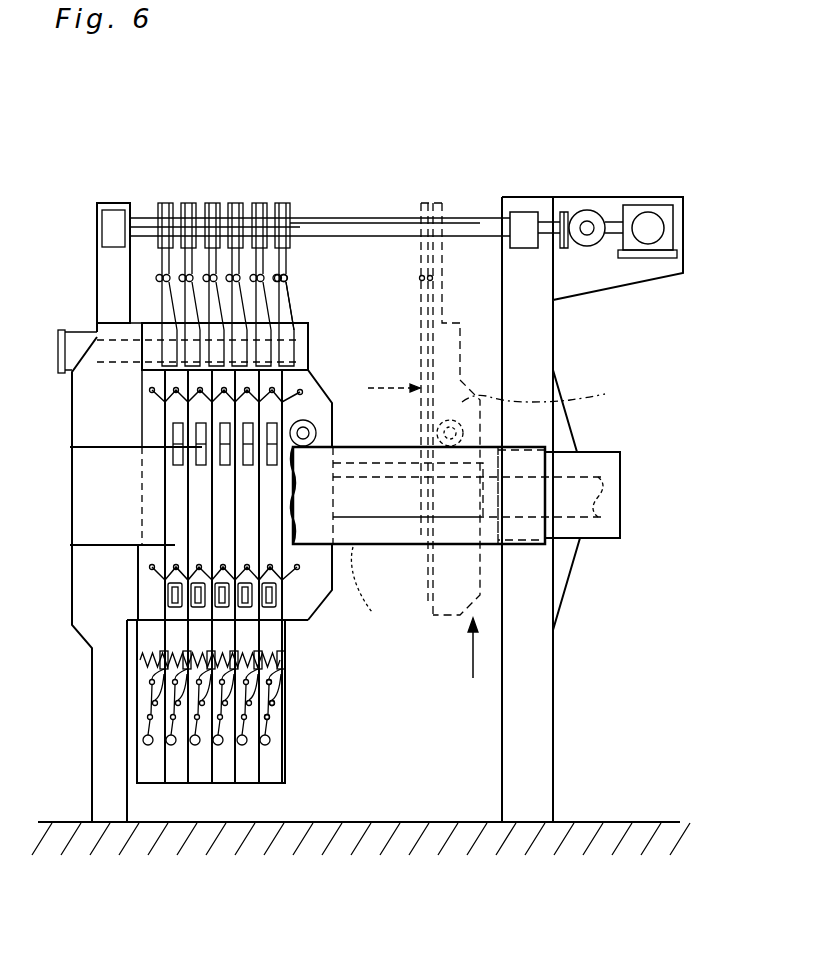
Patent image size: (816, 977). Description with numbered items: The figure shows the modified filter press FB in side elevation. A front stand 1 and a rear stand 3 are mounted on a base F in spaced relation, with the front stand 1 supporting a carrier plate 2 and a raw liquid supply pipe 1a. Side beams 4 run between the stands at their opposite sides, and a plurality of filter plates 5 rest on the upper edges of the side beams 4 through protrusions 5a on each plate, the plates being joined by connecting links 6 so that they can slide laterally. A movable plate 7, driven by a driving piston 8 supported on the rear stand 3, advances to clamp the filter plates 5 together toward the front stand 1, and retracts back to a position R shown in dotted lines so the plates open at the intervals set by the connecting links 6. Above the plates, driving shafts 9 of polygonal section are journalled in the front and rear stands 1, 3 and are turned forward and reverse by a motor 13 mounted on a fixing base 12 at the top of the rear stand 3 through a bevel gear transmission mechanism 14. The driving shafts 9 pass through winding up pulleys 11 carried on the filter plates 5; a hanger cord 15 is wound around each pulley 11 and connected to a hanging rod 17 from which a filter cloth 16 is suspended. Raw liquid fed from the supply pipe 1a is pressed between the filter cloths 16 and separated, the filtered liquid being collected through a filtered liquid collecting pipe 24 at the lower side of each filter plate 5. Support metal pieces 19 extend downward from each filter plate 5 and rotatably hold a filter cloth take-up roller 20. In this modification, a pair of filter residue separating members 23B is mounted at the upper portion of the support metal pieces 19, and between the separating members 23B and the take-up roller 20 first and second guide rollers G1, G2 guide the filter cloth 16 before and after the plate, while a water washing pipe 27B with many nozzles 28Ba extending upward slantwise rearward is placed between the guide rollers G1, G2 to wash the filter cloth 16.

The front stand 1 is at (83, 383).
The raw liquid supply pipe 1a is at (82, 332).
The carrier plate 2 is at (152, 415).
The rear stand 3 is at (528, 322).
The side beams 4 is at (392, 545).
The filter plates 5 is at (163, 582).
The protrusions 5a is at (175, 440).
The connecting links 6 is at (300, 392).
The movable plate 7 is at (317, 413).
The driving piston 8 is at (368, 596).
The driving shafts 9 is at (333, 218).
The winding up pulleys 11 is at (281, 203).
The fixing base 12 is at (657, 260).
The motor 13 is at (648, 212).
The bevel gear transmission mechanism 14 is at (563, 211).
The hanger cord 15 is at (285, 252).
The filter cloth 16 is at (283, 296).
The hanging rod 17 is at (283, 278).
The support metal pieces 19 is at (270, 788).
The filter cloth take-up roller 20 is at (283, 745).
The filter residue separating members 23B is at (295, 654).
The filtered liquid collecting pipe 24 is at (173, 605).
The water washing pipe 27B is at (283, 705).
The nozzles 28Ba is at (283, 699).
The first guide roller G1 is at (282, 672).
The second guide roller G2 is at (280, 713).
The base F is at (527, 830).
The retracted position R is at (476, 664).
The modified filter press FB is at (495, 105).